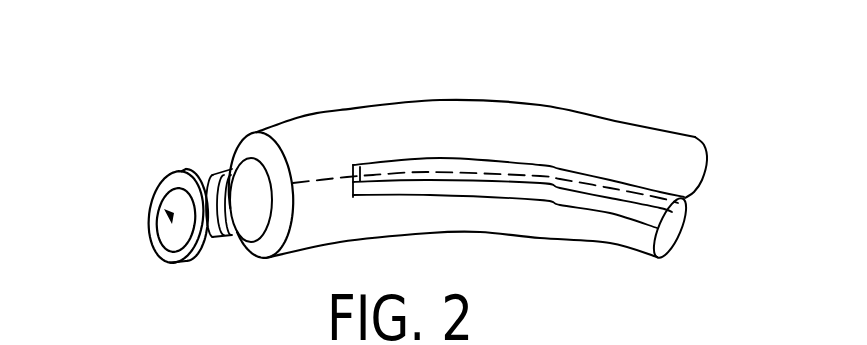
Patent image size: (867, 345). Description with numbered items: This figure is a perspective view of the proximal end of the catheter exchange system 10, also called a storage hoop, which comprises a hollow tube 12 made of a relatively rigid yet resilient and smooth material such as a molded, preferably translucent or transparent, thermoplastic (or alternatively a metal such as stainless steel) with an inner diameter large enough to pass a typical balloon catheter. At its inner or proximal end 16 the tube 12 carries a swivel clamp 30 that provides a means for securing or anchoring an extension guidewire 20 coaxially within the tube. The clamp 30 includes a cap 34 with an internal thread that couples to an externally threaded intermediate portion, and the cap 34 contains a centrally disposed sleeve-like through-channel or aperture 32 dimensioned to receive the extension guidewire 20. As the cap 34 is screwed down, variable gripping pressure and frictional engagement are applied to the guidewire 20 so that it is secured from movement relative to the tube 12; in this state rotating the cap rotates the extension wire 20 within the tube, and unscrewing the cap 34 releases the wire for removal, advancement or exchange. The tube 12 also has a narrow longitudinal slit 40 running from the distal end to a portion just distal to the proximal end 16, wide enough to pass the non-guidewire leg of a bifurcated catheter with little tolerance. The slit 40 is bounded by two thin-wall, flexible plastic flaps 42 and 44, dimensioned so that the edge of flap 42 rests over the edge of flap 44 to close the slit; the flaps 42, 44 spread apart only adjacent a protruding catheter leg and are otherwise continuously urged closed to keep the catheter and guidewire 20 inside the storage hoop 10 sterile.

The catheter exchange system 10 is at (556, 82).
The tube 12 is at (578, 126).
The proximal end 16 is at (270, 116).
The extension guidewire 20 is at (93, 247).
The swivel clamp 30 is at (186, 152).
The aperture 32 is at (170, 215).
The cap 34 is at (193, 262).
The longitudinal slit 40 is at (352, 174).
The flap 42 is at (413, 166).
The flap 44 is at (398, 185).